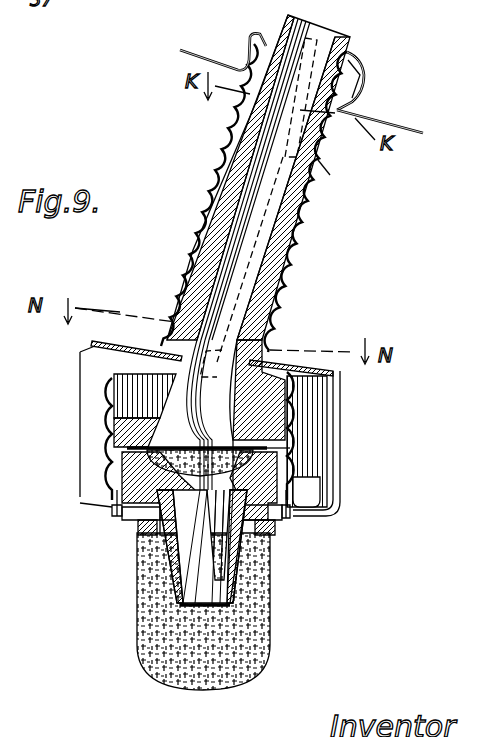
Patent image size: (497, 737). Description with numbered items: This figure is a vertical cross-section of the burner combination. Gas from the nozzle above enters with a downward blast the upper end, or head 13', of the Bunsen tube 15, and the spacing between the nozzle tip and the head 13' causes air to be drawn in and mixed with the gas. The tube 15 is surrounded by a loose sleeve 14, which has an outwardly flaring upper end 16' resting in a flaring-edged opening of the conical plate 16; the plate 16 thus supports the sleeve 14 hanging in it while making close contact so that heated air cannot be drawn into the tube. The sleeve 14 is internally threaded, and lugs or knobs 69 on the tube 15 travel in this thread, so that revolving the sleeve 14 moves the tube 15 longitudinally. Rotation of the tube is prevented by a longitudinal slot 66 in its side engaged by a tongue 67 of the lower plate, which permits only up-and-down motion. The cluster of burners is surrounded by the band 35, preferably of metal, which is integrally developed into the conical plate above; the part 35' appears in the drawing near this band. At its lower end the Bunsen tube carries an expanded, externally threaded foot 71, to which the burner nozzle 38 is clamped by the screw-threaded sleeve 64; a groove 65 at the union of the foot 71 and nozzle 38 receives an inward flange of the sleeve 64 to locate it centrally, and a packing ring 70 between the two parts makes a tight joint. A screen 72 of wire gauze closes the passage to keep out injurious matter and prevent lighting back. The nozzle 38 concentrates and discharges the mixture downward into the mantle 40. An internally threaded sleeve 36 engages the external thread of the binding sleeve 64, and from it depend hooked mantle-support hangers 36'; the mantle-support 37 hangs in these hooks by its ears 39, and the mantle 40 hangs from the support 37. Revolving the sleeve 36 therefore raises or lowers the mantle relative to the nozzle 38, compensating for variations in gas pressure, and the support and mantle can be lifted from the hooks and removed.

The head of Bunsen tube 13' is at (292, 179).
The loose sleeve 14 is at (212, 222).
The Bunsen tube 15 is at (302, 239).
The conical plate 16 is at (380, 96).
The outwardly flaring upper end 16' is at (371, 81).
The lugs or knobs 69 is at (250, 122).
The longitudinal slot 66 is at (322, 178).
The tongue 67 is at (176, 348).
The sleeve 36 is at (210, 436).
The packing ring 70 is at (112, 433).
The screw-threaded sleeve 64 is at (110, 450).
The expanded foot 71 is at (290, 412).
The groove 65 is at (292, 450).
The band 35 is at (240, 431).
The cup liner 35' is at (345, 441).
The screen 72 is at (208, 472).
The ears 39 is at (108, 515).
The hooked mantle-support hangers 36' is at (213, 535).
The mantle-support 37 is at (138, 528).
The burner nozzle 38 is at (195, 565).
The mantle 40 is at (135, 650).